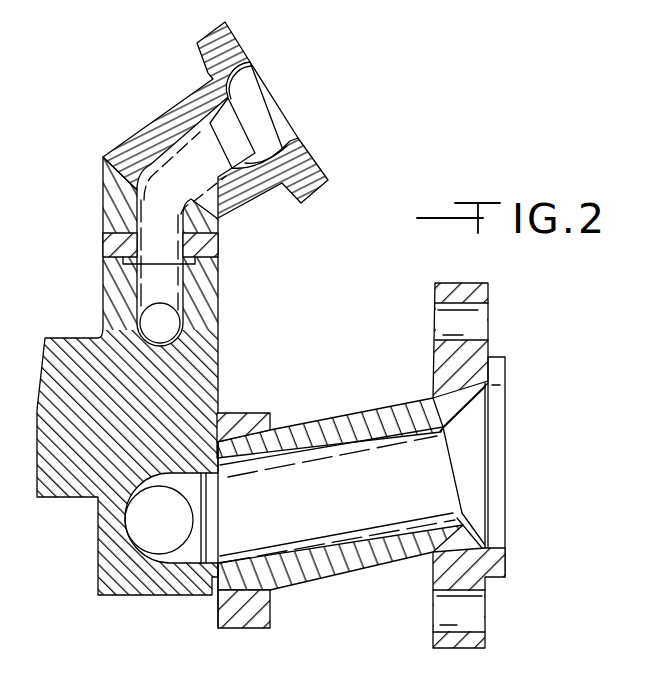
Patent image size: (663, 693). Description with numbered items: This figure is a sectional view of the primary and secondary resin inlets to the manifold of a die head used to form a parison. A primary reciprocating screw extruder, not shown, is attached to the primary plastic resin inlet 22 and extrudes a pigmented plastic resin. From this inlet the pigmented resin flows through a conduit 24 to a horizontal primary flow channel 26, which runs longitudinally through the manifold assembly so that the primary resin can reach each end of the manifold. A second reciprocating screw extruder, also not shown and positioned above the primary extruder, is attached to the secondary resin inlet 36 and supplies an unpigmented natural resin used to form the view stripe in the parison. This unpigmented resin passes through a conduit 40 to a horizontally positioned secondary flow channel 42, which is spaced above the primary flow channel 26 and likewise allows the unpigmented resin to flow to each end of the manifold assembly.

The primary plastic resin inlet 22 is at (496, 385).
The conduit 24 is at (316, 455).
The primary flow channel 26 is at (152, 547).
The secondary resin inlet 36 is at (288, 147).
The conduit 40 is at (161, 160).
The secondary flow channel 42 is at (172, 320).